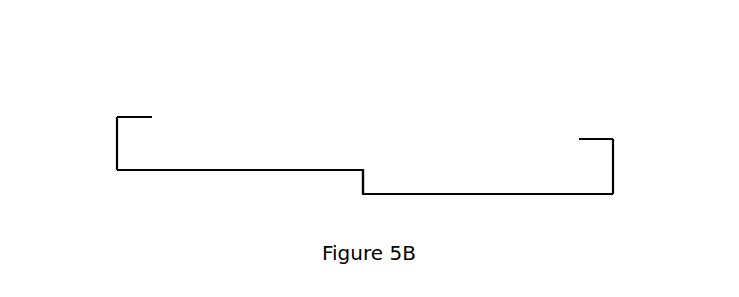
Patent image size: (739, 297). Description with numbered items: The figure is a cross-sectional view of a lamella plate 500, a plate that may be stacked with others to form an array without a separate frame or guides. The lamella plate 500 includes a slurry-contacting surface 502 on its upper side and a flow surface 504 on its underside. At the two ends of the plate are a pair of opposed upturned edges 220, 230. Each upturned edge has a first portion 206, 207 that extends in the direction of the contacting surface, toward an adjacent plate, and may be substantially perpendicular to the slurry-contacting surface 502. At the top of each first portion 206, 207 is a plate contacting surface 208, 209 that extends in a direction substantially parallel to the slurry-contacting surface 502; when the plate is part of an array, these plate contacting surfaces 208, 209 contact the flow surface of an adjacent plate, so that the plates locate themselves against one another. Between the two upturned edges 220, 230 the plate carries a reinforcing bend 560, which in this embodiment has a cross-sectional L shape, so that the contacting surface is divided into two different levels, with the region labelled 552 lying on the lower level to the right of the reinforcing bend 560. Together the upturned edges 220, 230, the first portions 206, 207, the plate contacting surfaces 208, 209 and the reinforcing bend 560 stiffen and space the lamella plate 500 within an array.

The lamella plate 500 is at (242, 74).
The first portion 206 is at (117, 142).
The plate contacting surface 208 is at (141, 116).
The upturned edge 220 is at (127, 114).
The slurry-contacting surface 502 is at (327, 166).
The flow surface 504 is at (318, 182).
The reinforcing bend 560 is at (364, 170).
The recessed region 552 is at (456, 148).
The first portion 207 is at (613, 166).
The plate contacting surface 209 is at (593, 138).
The upturned edge 230 is at (618, 135).